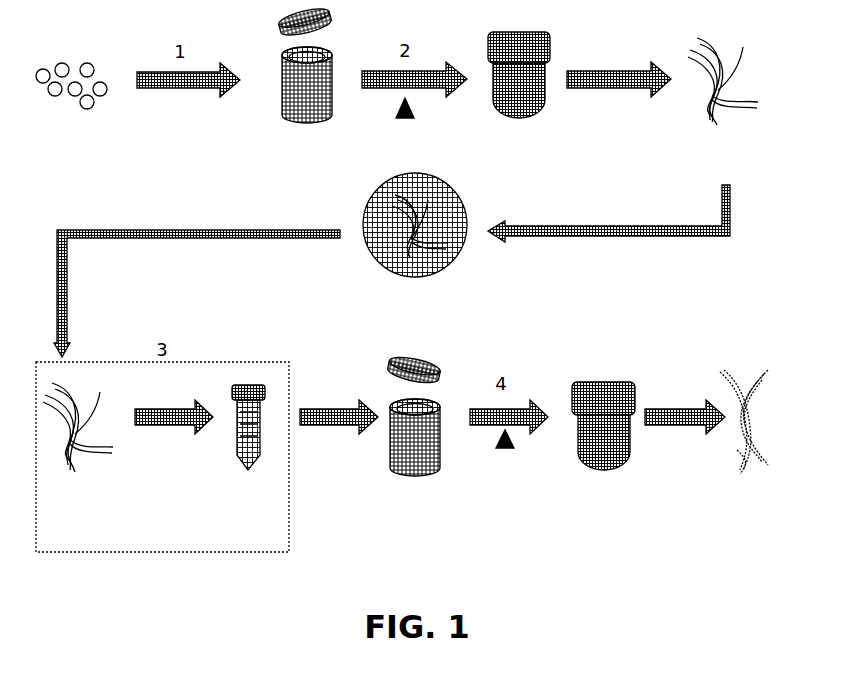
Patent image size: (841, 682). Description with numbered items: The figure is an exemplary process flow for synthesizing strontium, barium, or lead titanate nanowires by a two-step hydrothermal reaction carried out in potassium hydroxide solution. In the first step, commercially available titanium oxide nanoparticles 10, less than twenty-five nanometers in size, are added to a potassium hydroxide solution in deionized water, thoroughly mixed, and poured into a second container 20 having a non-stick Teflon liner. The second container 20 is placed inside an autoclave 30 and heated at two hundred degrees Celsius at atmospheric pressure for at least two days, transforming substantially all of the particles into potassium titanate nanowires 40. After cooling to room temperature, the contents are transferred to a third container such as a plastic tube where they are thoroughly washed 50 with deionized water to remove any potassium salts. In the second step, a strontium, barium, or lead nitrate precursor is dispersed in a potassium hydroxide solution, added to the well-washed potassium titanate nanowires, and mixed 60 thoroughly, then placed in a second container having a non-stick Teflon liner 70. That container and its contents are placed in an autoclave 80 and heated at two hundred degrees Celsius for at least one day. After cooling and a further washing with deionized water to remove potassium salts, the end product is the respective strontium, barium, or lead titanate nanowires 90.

The titanium oxide nanoparticles 10 is at (113, 103).
The second container 20 is at (333, 107).
The autoclave 30 is at (553, 107).
The nanowires 40 is at (689, 103).
The wash 50 is at (462, 250).
The mixing 60 is at (191, 362).
The non-stick liner 70 is at (440, 455).
The autoclave 80 is at (602, 384).
The strontium/barium/lead titanate nanowires 90 is at (723, 447).